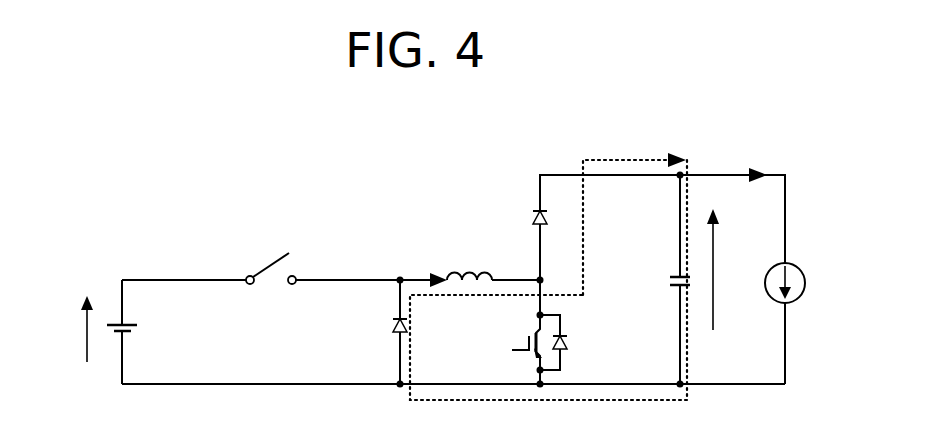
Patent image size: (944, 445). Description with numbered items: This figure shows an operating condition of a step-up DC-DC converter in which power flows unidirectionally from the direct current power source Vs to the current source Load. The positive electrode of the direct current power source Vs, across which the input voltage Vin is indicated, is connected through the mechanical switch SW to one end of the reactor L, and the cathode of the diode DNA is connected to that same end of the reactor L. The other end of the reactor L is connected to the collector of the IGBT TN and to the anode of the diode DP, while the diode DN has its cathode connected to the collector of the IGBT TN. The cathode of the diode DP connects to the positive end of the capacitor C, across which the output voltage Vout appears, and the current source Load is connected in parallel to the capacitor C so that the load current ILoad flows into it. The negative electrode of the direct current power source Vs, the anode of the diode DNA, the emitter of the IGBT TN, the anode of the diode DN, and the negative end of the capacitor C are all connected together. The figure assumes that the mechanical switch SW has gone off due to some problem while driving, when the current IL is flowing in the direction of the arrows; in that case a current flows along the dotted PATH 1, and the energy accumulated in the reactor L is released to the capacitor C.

The input voltage Vin is at (65, 329).
The direct current power source Vs is at (139, 332).
The mechanical switch SW is at (271, 289).
The current IL is at (432, 258).
The reactor L is at (469, 255).
The diode DNA is at (376, 332).
The IGBT TN is at (513, 342).
The diode DN is at (580, 342).
The diode DP is at (549, 217).
The path 1 PATH 1 is at (548, 261).
The capacitor C is at (666, 280).
The output voltage Vout is at (731, 288).
The load current ILoad is at (739, 152).
The current source Load is at (823, 283).